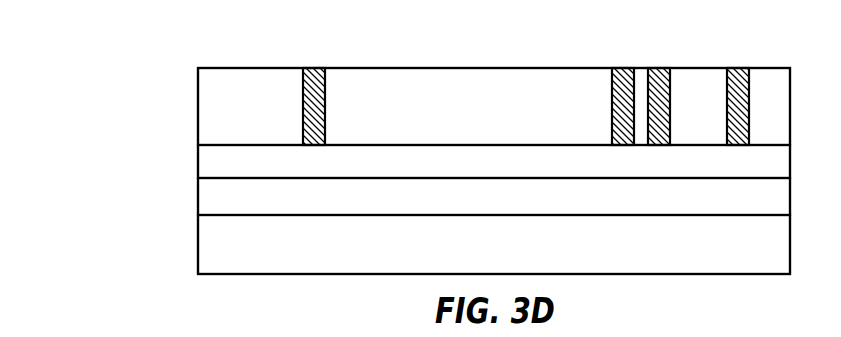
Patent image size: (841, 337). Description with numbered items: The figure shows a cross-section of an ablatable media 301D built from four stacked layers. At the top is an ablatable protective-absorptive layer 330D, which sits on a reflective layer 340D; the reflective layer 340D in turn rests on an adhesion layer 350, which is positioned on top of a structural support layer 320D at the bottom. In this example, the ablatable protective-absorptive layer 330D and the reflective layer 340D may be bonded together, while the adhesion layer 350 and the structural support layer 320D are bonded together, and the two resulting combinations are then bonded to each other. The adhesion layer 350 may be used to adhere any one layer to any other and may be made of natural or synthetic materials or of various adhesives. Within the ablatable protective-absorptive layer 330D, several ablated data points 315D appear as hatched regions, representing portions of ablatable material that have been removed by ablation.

The ablatable media 301D is at (134, 93).
The ablated data points 315D is at (737, 68).
The ablatable protective-absorptive layer 330D is at (545, 138).
The reflective layer 340D is at (595, 171).
The adhesion layer 350 is at (585, 208).
The structural support layer 320D is at (518, 266).